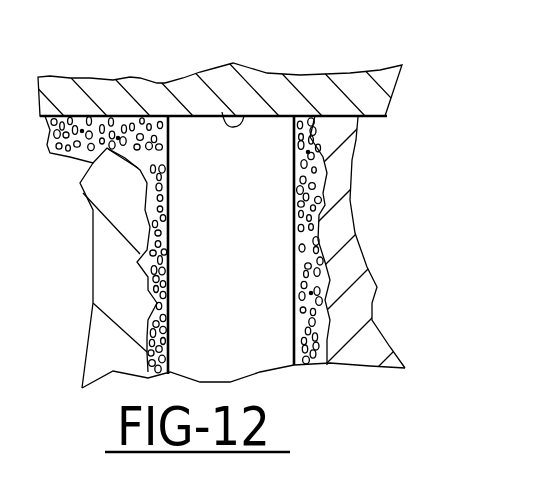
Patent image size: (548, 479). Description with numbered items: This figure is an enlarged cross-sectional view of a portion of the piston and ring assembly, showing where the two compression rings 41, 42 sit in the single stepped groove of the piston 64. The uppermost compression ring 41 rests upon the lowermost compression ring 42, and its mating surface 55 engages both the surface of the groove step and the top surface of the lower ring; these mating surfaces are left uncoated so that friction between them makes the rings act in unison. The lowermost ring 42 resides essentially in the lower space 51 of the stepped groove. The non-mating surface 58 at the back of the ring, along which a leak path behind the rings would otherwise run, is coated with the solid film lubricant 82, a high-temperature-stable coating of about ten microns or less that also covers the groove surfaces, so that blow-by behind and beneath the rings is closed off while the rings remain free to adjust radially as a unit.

The uppermost compression ring 41 is at (258, 102).
The mating surface of uppermost ring 55 is at (222, 112).
The lower space of stepped groove 51 is at (248, 164).
The lowermost compression ring 42 is at (342, 168).
The non-mating surface of compression ring 58 is at (320, 213).
The solid film lubricant 82 is at (310, 300).
The piston 64 is at (108, 260).